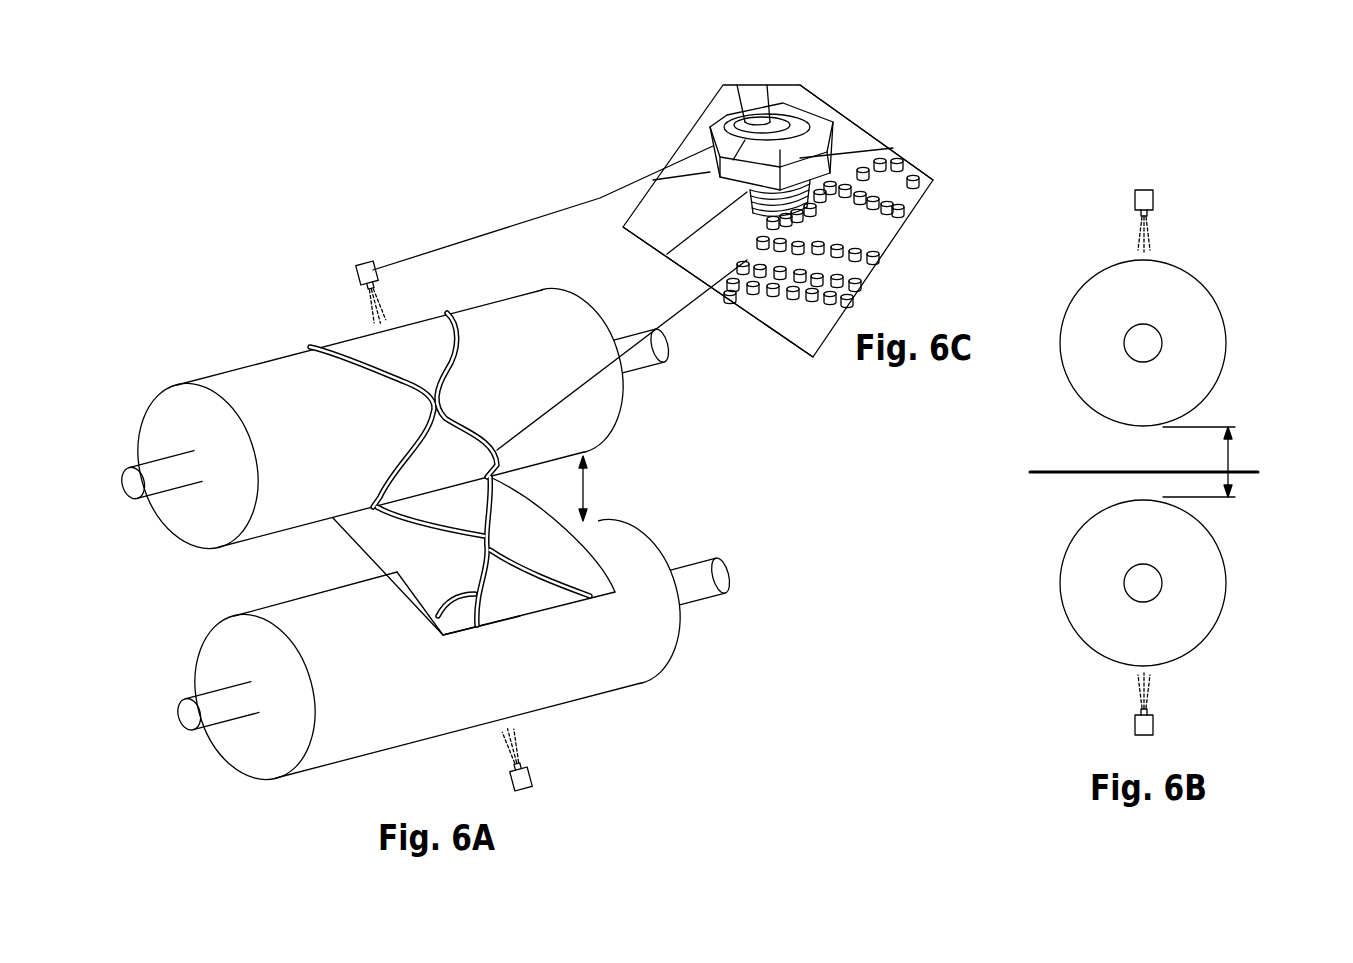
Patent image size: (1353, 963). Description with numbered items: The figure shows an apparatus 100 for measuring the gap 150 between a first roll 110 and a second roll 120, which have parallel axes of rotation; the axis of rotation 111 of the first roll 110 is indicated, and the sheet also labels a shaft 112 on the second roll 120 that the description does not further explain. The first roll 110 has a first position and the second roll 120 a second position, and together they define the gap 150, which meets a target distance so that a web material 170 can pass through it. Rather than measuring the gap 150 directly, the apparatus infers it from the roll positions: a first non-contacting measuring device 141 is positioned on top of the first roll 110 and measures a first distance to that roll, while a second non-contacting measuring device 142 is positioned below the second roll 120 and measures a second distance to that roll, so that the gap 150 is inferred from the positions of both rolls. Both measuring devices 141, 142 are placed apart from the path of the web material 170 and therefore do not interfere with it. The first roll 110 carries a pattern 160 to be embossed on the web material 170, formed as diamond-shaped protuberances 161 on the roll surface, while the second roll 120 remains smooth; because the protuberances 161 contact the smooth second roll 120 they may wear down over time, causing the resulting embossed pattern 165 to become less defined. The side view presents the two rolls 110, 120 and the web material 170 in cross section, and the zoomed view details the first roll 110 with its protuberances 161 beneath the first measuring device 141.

In FIG. 6A, the apparatus 100 is at (180, 333).
In FIG. 6B, the apparatus 100 is at (1252, 245).
In FIG. 6A, the first roll 110 is at (245, 370).
In FIG. 6C, the first roll 110 is at (706, 248).
In FIG. 6B, the first roll 110 is at (1227, 320).
In FIG. 6A, the axis of rotation 111 is at (654, 366).
In FIG. 6A, the second roller shaft 112 is at (708, 580).
In FIG. 6A, the second roll 120 is at (280, 603).
In FIG. 6B, the second roll 120 is at (1227, 562).
In FIG. 6A, the first non-contacting measuring device 141 is at (364, 262).
In FIG. 6B, the first non-contacting measuring device 141 is at (1154, 200).
In FIG. 6A, the second non-contacting measuring device 142 is at (532, 773).
In FIG. 6C, the second non-contacting measuring device 142 is at (800, 118).
In FIG. 6B, the second non-contacting measuring device 142 is at (1154, 722).
In FIG. 6A, the gap 150 is at (590, 487).
In FIG. 6B, the gap 150 is at (1233, 455).
In FIG. 6A, the pattern 160 is at (457, 313).
In FIG. 6C, the pattern 160 is at (832, 203).
In FIG. 6C, the diamond-shaped protuberances 161 is at (893, 147).
In FIG. 6A, the embossed pattern 165 is at (440, 632).
In FIG. 6A, the web material 170 is at (528, 615).
In FIG. 6B, the web material 170 is at (1078, 473).